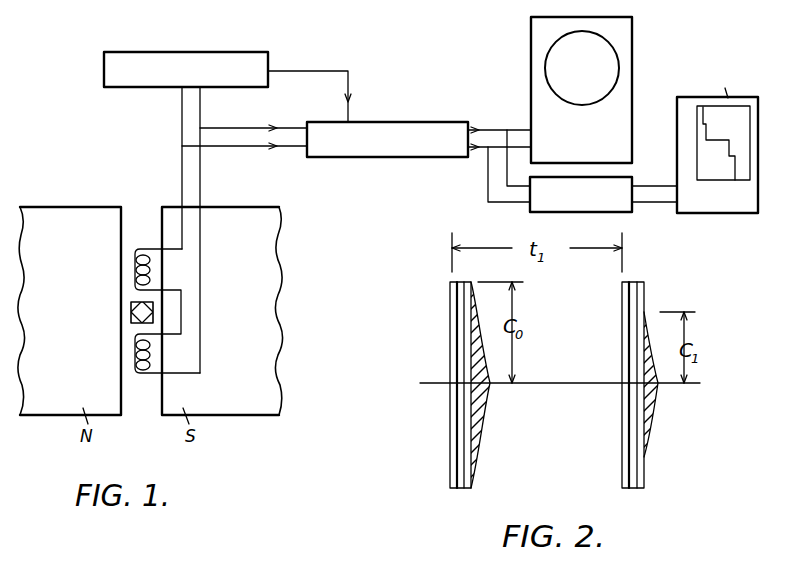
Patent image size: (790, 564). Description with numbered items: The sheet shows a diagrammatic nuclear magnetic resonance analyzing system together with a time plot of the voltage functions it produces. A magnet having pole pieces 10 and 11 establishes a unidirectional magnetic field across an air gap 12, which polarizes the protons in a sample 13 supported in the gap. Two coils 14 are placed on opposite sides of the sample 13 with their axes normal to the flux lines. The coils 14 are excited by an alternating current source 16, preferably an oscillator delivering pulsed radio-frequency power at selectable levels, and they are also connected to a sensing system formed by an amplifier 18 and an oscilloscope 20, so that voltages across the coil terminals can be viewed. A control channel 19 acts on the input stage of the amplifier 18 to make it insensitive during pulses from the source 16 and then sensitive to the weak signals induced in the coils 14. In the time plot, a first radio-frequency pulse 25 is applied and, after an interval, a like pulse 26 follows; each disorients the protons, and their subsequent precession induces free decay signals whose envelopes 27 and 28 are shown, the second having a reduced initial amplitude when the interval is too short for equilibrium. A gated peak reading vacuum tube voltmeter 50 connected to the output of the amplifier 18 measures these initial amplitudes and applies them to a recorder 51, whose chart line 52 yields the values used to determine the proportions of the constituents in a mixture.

In FIG. 1, the pole piece 10 is at (238, 399).
In FIG. 1, the pole piece 11 is at (76, 399).
In FIG. 1, the air gap 12 is at (138, 404).
In FIG. 1, the sample 13 is at (131, 313).
In FIG. 1, the coils 14 is at (147, 248).
In FIG. 1, the alternating current source 16 is at (104, 71).
In FIG. 1, the amplifier 18 is at (407, 122).
In FIG. 1, the channel 19 is at (349, 73).
In FIG. 1, the oscilloscope device 20 is at (531, 104).
In FIG. 2, the pulse 25 is at (450, 294).
In FIG. 2, the pulse 26 is at (622, 294).
In FIG. 2, the envelope 27 is at (481, 311).
In FIG. 2, the envelope 28 is at (648, 318).
In FIG. 1, the gated peak reading vacuum tube voltmeter 50 is at (575, 212).
In FIG. 1, the recorder 51 is at (715, 213).
In FIG. 1, the recorder chart line 52 is at (730, 168).